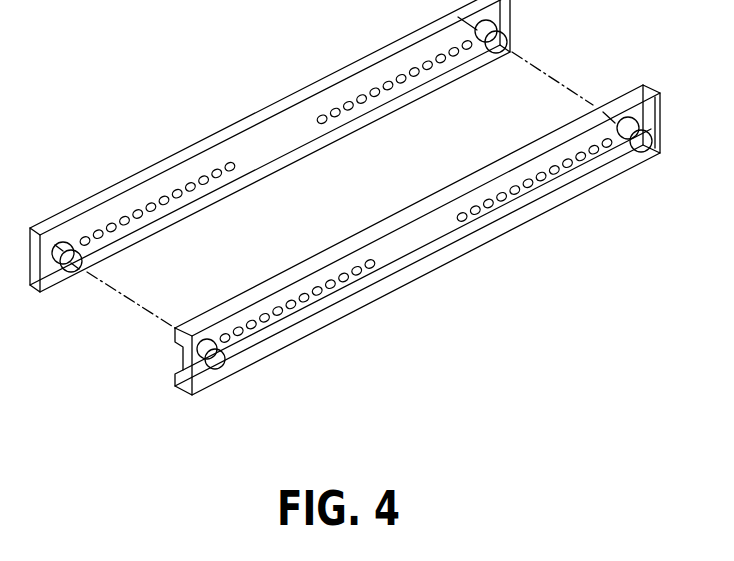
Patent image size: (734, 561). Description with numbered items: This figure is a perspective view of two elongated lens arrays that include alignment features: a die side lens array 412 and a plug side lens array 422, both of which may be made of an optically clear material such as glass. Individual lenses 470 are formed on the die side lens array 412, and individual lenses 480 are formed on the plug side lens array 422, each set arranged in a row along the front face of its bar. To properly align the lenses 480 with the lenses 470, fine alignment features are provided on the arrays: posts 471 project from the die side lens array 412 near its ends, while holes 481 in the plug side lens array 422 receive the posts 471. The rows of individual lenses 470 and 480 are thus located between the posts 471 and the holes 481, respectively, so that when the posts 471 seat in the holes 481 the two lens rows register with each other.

The die side lens array 412 is at (269, 110).
The individual lenses 470 is at (165, 193).
The posts 471 is at (68, 272).
The plug side lens array 422 is at (442, 267).
The individual lenses 480 is at (537, 180).
The holes 481 is at (222, 367).